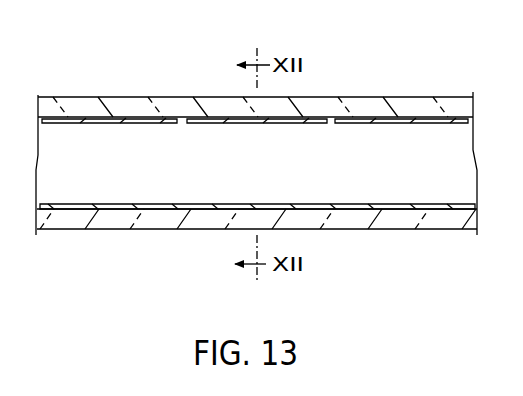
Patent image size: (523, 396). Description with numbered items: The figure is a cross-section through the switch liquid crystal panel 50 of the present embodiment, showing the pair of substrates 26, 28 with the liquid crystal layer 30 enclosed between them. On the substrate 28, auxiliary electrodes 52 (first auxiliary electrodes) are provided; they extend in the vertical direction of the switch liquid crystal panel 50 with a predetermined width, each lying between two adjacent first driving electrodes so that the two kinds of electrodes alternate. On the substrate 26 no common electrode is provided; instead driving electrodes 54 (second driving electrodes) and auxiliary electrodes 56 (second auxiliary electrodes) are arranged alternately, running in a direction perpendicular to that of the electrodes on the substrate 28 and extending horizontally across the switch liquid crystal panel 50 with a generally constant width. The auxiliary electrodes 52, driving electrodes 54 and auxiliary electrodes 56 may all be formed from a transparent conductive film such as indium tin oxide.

The switch liquid crystal panel 50 is at (457, 95).
The substrate 26 is at (353, 110).
The substrate 28 is at (407, 220).
The liquid crystal layer 30 is at (185, 137).
The auxiliary electrodes 52 is at (102, 210).
The driving electrodes 54 is at (128, 120).
The auxiliary electrodes 56 is at (221, 121).